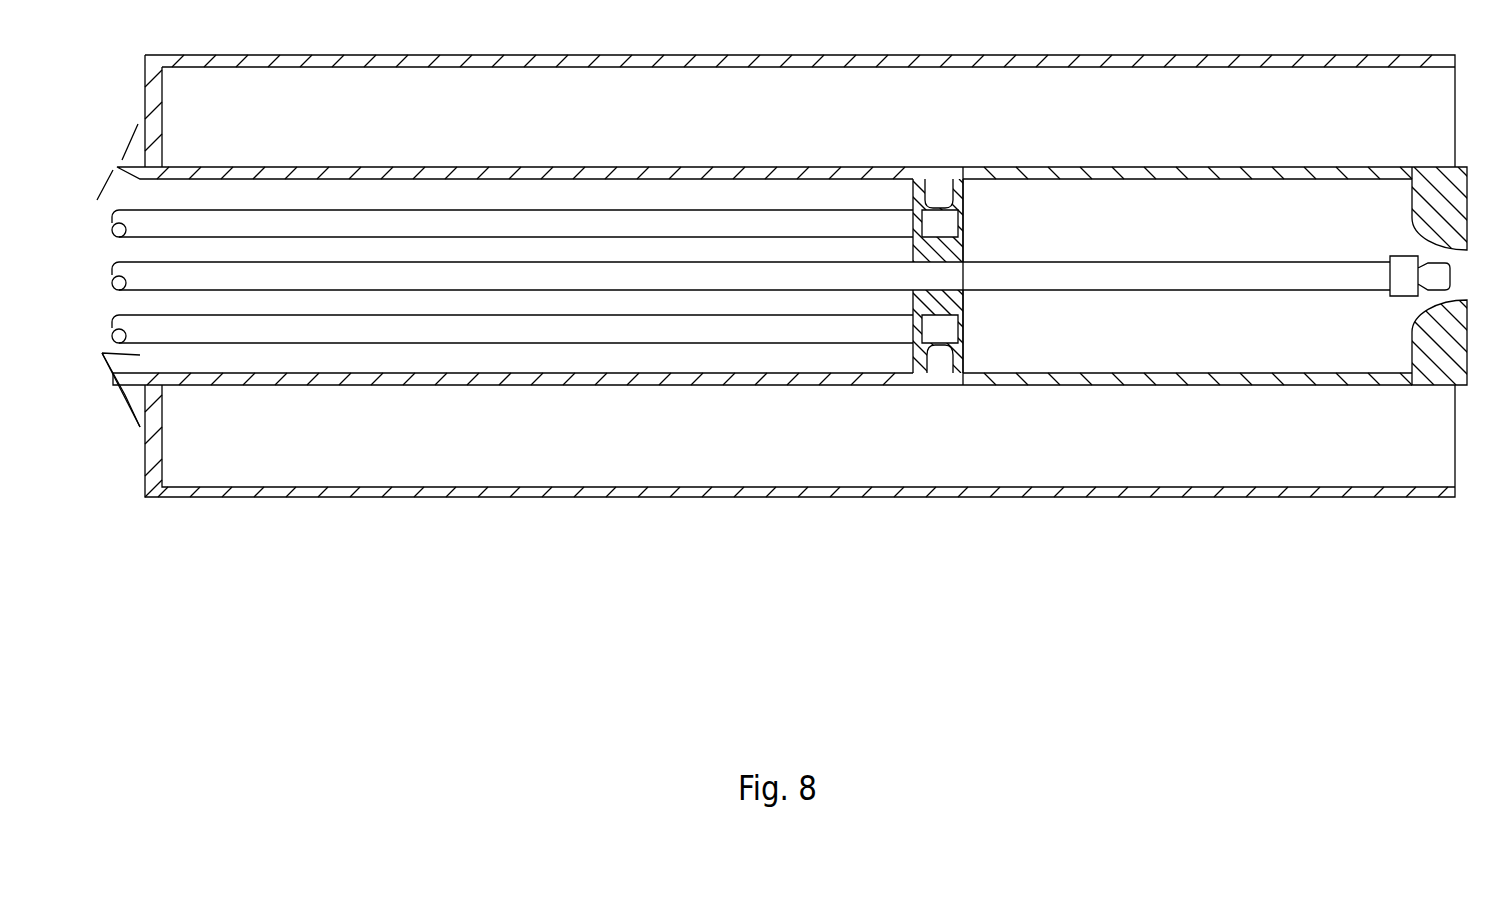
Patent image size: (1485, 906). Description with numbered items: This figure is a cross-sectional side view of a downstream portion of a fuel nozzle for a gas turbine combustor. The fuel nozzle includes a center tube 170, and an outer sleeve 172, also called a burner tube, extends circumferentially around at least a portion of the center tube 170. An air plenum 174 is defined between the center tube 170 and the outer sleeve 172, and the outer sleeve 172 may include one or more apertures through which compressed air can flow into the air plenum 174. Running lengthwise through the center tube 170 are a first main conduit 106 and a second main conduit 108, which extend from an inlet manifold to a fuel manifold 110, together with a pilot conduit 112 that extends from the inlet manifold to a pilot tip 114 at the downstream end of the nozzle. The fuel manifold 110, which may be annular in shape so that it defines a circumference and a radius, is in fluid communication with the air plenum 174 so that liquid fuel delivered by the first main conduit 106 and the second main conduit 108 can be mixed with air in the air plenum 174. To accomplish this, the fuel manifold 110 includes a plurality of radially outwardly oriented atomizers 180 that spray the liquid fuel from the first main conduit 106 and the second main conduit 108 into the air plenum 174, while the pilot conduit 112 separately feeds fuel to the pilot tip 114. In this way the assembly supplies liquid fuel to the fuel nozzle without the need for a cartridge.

The first main conduit 106 is at (605, 332).
The second main conduit 108 is at (602, 230).
The fuel manifold 110 is at (957, 187).
The pilot conduit 112 is at (1077, 282).
The pilot tip 114 is at (1442, 350).
The center tube 170 is at (1147, 178).
The outer sleeve 172 is at (967, 65).
The air plenum 174 is at (702, 118).
The atomizer 180 is at (945, 363).